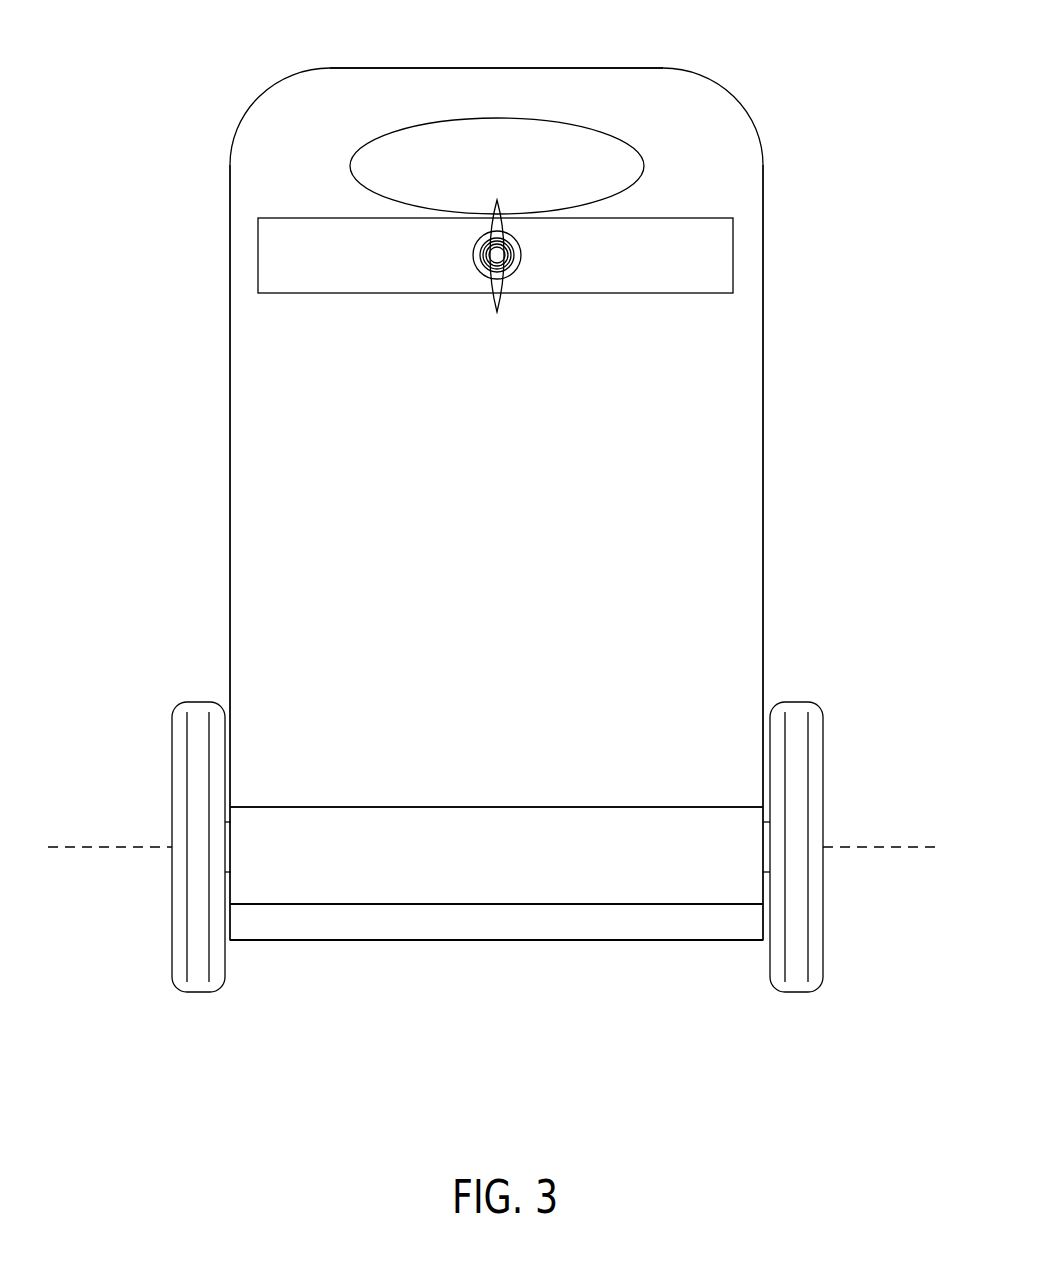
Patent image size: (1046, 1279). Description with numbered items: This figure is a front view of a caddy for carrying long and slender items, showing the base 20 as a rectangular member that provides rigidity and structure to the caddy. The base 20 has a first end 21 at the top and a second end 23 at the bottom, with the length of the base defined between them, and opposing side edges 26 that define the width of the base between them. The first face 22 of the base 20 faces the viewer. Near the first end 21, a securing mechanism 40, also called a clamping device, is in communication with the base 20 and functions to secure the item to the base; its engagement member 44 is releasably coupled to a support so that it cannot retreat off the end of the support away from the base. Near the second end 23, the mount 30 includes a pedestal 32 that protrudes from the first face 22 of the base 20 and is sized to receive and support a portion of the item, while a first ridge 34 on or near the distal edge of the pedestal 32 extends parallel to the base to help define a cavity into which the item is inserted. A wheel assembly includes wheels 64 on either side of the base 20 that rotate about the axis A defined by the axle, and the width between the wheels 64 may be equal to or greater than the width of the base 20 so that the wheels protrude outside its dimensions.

The base 20 is at (210, 374).
The first end 21 is at (508, 68).
The first face 22 is at (511, 471).
The second end 23 is at (497, 942).
The side edges 26 is at (229, 473).
The mount 30 is at (309, 958).
The pedestal 32 is at (395, 925).
The first ridge 34 is at (605, 890).
The securing mechanism 40 is at (303, 206).
The engagement member 44 is at (662, 247).
The wheels 64 is at (192, 779).
The axis A is at (92, 847).